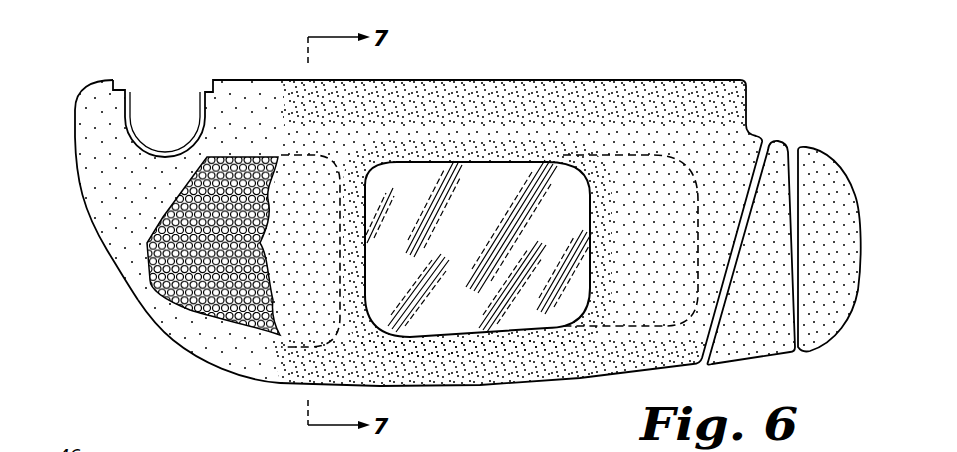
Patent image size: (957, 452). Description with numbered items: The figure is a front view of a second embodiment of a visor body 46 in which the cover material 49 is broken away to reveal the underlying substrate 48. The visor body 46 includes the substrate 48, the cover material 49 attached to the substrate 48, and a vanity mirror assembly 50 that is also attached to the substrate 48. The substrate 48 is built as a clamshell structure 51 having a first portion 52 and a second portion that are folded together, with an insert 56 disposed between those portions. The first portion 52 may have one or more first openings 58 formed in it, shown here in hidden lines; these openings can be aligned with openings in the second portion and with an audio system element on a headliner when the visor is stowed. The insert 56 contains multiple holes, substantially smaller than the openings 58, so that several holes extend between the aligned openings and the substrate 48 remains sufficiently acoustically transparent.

The visor body 46 is at (136, 352).
The substrate 48 is at (130, 260).
The cover material 49 is at (485, 110).
The vanity mirror assembly 50 is at (523, 157).
The clamshell structure 51 is at (152, 303).
The first portion 52 is at (190, 333).
The insert 56 is at (203, 170).
The first openings 58 is at (698, 207).